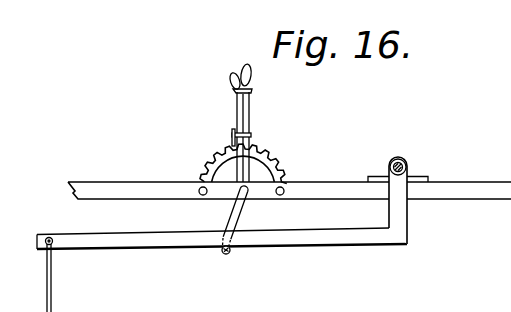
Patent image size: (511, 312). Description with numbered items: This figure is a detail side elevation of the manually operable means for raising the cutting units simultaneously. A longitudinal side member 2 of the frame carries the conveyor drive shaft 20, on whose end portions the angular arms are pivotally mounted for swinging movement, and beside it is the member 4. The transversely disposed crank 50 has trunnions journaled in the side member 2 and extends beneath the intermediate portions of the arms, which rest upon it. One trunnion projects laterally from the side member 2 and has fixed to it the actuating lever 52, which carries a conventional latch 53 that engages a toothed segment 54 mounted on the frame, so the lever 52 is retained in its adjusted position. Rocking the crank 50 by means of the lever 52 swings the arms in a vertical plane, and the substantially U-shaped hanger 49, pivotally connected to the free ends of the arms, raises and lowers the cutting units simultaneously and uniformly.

The longitudinal member 2 is at (482, 182).
The lower link bar 4 is at (222, 259).
The conveyor drive shaft 20 is at (406, 160).
The hanger 49 is at (51, 308).
The crank 50 is at (241, 220).
The actuating lever 52 is at (248, 120).
The latch 53 is at (232, 134).
The toothed segment 54 is at (262, 173).